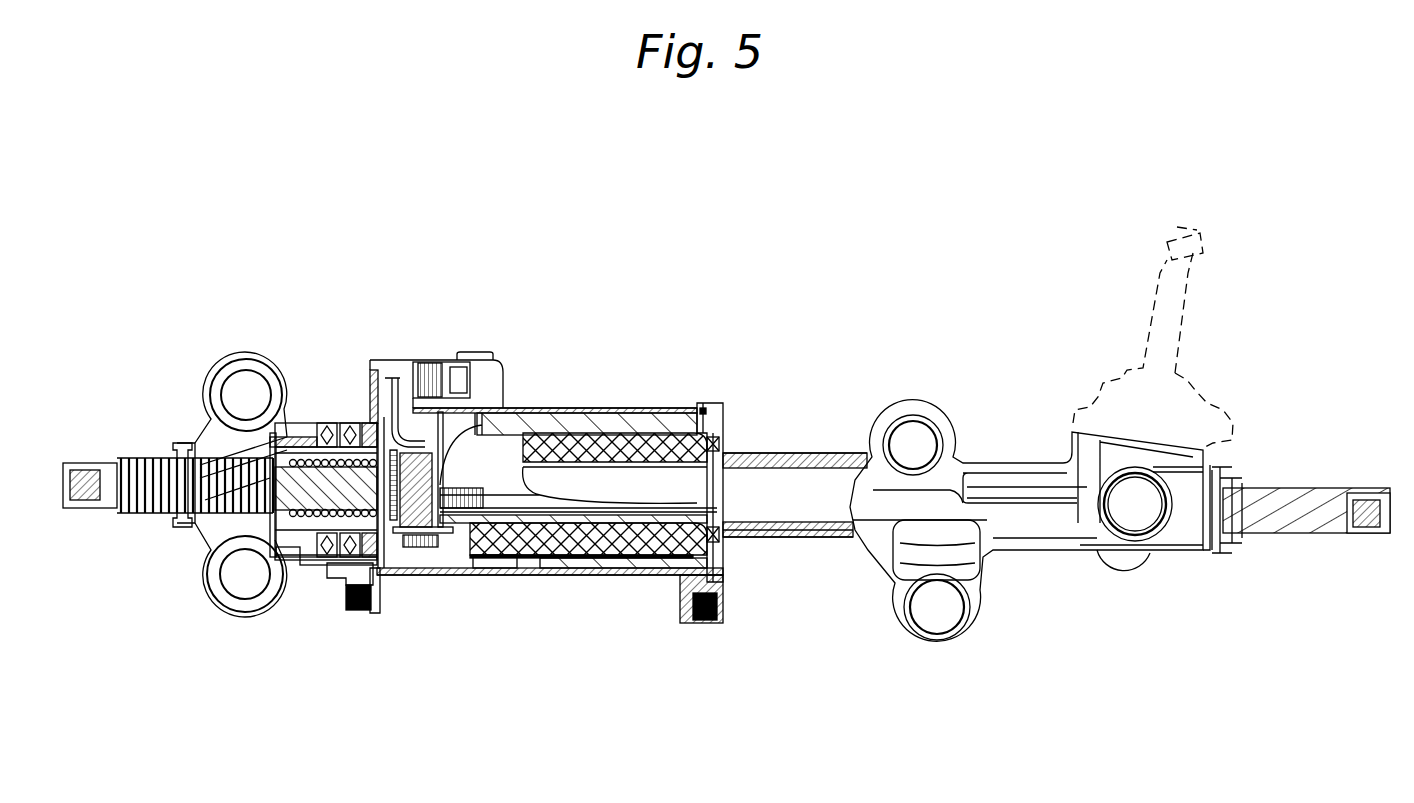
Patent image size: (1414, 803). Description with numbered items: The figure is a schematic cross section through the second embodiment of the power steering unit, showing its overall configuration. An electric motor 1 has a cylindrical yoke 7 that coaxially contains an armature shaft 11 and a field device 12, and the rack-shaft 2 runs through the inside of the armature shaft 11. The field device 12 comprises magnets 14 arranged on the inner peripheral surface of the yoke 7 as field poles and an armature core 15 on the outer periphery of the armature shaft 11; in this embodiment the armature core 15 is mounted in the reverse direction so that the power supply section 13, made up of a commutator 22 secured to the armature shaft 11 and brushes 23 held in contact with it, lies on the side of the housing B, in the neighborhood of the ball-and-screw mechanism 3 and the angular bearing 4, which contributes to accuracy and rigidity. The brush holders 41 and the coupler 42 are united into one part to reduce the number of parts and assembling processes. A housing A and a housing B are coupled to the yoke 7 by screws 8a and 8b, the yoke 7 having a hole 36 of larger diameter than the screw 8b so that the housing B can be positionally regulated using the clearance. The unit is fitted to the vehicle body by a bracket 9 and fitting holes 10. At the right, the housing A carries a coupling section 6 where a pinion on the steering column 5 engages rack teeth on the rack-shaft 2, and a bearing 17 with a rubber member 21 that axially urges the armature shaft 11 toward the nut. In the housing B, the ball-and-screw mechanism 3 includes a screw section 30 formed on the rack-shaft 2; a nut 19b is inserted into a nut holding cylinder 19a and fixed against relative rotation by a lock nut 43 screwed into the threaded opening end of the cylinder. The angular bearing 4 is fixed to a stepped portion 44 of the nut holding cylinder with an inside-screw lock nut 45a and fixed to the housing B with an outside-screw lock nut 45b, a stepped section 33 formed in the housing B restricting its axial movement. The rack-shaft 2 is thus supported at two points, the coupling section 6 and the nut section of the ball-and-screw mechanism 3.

The electric motor 1 is at (607, 408).
The rack-shaft 2 is at (777, 490).
The ball-and-screw mechanism 3 is at (330, 575).
The angular bearing 4 is at (330, 425).
The steering column 5 is at (1193, 287).
The coupling section 6 is at (1130, 512).
The yoke 7 is at (600, 575).
The screws 8a is at (700, 612).
The screws 8b is at (380, 605).
The bracket 9 is at (913, 403).
The fitting holes 10 is at (230, 393).
The armature shaft 11 is at (545, 575).
The field device 12 is at (660, 437).
The power supply section 13 is at (418, 540).
The magnets 14 is at (580, 408).
The armature core 15 is at (648, 575).
The bearing 17 is at (735, 575).
The nut holding cylinder 19a is at (262, 555).
The nut 19b is at (290, 425).
The rubber member 21 is at (725, 537).
The commutator 22 is at (412, 378).
The brush 23 is at (492, 372).
The screw section 30 is at (157, 500).
The stepped section 33 is at (300, 565).
The hole 36 is at (355, 613).
The brush holders 41 is at (445, 378).
The coupler 42 is at (470, 355).
The lock nut 43 is at (265, 425).
The stepped portion 44 is at (318, 450).
The inside-screw lock nut 45a is at (362, 425).
The outside-screw lock nut 45b is at (375, 420).
The housing A is at (813, 540).
The housing B is at (207, 450).